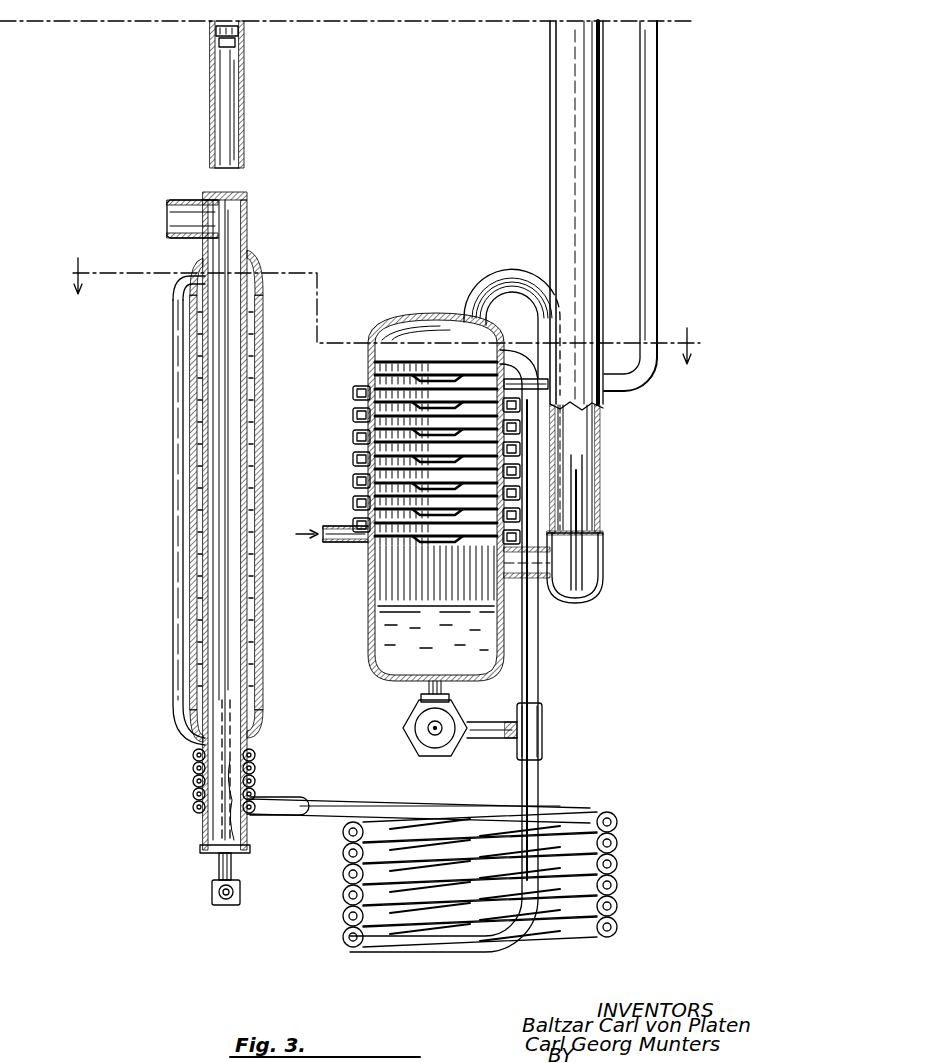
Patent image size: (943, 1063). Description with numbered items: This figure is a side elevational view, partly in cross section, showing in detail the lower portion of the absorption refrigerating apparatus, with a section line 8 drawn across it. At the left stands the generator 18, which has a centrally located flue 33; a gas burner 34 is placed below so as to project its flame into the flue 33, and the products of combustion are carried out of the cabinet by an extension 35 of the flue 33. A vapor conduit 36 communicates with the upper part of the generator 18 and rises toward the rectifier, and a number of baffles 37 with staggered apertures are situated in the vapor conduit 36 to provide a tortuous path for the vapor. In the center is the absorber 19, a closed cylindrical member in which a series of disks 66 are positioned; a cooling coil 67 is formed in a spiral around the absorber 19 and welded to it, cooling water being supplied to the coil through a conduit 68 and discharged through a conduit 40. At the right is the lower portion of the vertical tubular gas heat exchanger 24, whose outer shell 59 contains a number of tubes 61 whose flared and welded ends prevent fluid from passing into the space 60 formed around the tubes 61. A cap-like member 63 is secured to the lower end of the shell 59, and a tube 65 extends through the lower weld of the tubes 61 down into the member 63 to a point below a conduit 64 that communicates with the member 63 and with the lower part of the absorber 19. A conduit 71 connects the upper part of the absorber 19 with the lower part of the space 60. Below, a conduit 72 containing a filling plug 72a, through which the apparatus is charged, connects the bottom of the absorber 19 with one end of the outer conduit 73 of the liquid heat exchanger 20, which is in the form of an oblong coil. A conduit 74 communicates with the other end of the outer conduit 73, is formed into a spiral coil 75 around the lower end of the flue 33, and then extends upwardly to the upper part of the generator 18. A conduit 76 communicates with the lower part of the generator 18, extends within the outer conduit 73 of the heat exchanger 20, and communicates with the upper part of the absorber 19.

The section line 8- 8 is at (379, 311).
The generator 18 is at (266, 625).
The absorber 19 is at (413, 315).
The liquid heat exchanger 20 is at (588, 812).
The gas heat exchanger 24 is at (556, 224).
The flue 33 is at (235, 412).
The gas burner 34 is at (213, 900).
The flue extension 35 is at (180, 200).
The vapor conduit 36 is at (246, 93).
The baffles 37 is at (232, 54).
The conduit 40 is at (650, 278).
The outer shell 59 is at (602, 458).
The space 60 is at (580, 485).
The tubes 61 is at (565, 432).
The cap-like member 63 is at (598, 598).
The conduit 64 is at (543, 582).
The tube 65 is at (578, 572).
The disks 66 is at (375, 362).
The cooling coil 67 is at (352, 447).
The conduit 68 is at (333, 542).
The conduit 71 is at (494, 286).
The conduit 72 is at (482, 740).
The filling plug 72a is at (405, 727).
The outer conduit 73 is at (541, 739).
The conduit 74 is at (178, 568).
The spiral coil 75 is at (194, 774).
The conduit 76 is at (534, 676).